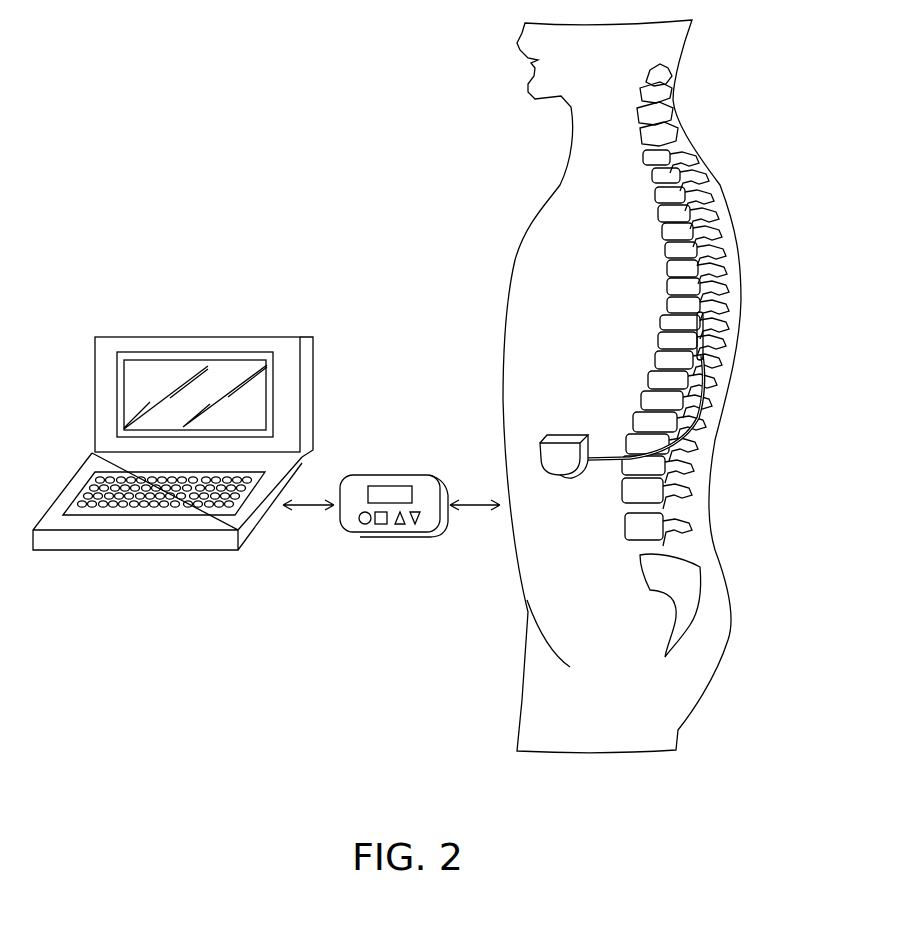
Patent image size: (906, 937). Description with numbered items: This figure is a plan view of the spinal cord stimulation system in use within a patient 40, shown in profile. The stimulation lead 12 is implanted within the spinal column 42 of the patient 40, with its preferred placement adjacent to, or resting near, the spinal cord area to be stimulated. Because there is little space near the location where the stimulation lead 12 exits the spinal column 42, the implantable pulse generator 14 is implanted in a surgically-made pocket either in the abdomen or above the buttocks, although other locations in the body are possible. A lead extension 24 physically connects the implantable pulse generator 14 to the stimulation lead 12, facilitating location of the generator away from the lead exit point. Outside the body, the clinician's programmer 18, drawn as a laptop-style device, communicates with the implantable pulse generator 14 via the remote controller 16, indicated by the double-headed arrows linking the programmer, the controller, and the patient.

The implantable stimulation lead 12 is at (708, 338).
The implantable pulse generator 14 is at (563, 463).
The remote controller 16 is at (413, 460).
The clinician's programmer 18 is at (183, 330).
The lead extension 24 is at (705, 413).
The patient 40 is at (512, 258).
The spinal column 42 is at (663, 313).